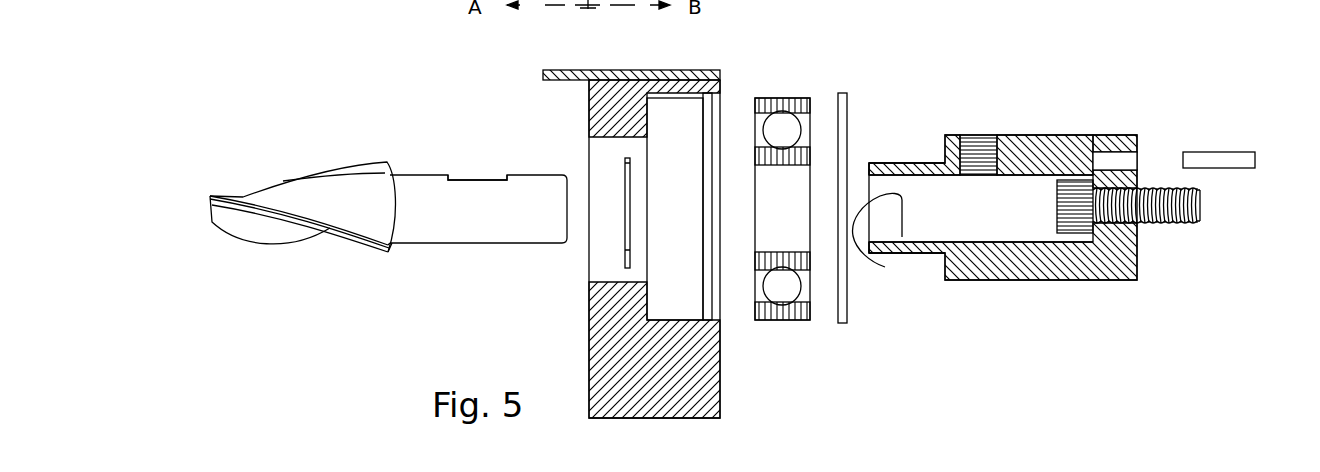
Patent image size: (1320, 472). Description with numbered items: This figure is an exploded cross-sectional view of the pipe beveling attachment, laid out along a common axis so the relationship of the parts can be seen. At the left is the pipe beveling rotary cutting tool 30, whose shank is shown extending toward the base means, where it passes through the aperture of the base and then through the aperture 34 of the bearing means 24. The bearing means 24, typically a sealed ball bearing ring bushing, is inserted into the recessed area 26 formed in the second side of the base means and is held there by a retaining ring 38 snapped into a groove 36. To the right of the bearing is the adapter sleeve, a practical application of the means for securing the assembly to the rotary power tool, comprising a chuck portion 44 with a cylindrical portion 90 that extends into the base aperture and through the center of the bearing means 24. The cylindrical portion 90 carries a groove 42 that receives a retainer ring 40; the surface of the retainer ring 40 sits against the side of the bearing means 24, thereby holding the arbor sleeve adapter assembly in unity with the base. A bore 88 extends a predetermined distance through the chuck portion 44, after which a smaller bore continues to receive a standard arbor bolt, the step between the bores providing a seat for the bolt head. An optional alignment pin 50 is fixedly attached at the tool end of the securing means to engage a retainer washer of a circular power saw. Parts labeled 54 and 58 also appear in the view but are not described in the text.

The bearing means 24 is at (783, 100).
The recessed area 26 is at (675, 317).
The pipe beveling rotary cutting tool 30 is at (377, 163).
The aperture of the bearing means 34 is at (686, 197).
The groove 36 is at (710, 108).
The retaining ring 38 is at (847, 318).
The retainer ring 40 is at (623, 260).
The groove 42 is at (875, 160).
The chuck portion 44 is at (1053, 280).
The alignment pin 50 is at (1213, 152).
The threaded screw 54 is at (1180, 223).
The notch 58 is at (453, 178).
The bore 88 is at (885, 267).
The cylindrical portion 90 is at (917, 160).